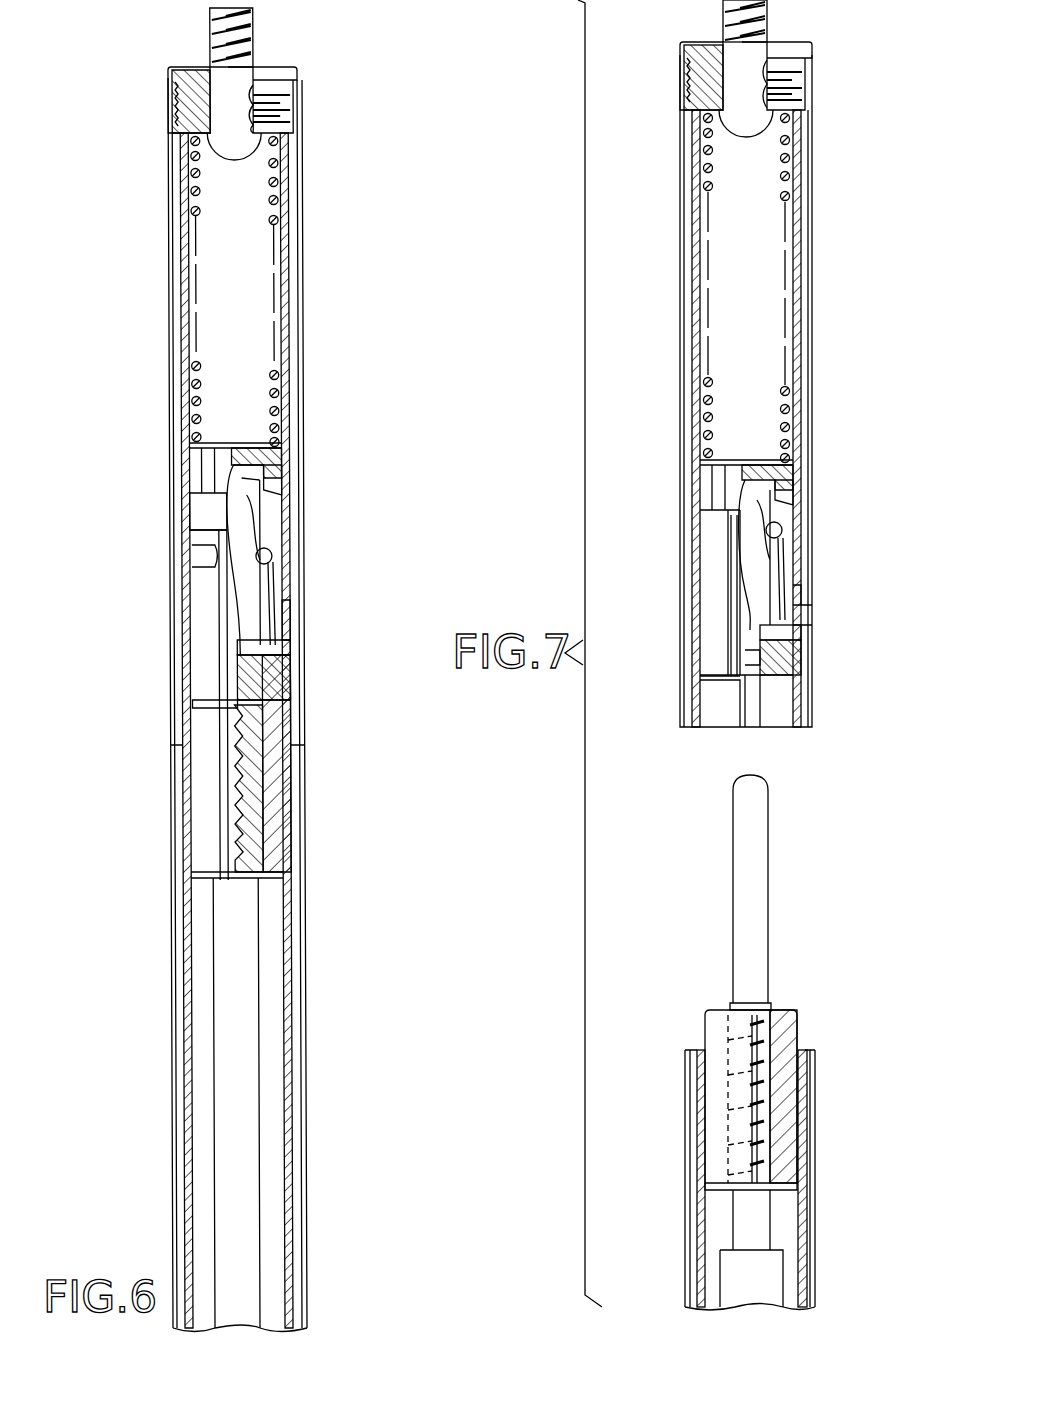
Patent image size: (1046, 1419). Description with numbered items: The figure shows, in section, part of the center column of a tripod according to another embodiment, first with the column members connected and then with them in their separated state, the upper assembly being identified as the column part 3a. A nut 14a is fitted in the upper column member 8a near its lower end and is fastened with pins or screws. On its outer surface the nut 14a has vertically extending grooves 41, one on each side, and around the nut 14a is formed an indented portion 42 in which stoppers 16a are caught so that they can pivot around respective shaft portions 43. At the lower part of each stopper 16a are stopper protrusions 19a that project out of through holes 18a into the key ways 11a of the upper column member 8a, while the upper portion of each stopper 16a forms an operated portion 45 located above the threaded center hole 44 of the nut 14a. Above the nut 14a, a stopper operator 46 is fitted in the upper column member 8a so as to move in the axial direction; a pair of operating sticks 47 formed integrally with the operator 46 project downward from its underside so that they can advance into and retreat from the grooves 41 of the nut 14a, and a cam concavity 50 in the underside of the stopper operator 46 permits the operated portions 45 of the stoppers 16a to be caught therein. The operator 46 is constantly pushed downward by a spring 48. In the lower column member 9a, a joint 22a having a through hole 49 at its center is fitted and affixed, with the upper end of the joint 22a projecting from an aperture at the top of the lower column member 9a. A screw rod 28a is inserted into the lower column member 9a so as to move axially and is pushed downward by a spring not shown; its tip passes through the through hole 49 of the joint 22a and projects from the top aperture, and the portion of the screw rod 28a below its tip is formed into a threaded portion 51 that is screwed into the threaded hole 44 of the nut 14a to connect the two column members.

In FIG. 6, the cap assembly 3a is at (168, 128).
In FIG. 6, the upper column member 8a is at (285, 380).
In FIG. 7, the upper column member 8a is at (800, 320).
In FIG. 6, the lower column member 9a is at (300, 1080).
In FIG. 6, the key ways 11a is at (170, 325).
In FIG. 7, the key ways 11a is at (812, 220).
In FIG. 6, the nut 14a is at (272, 683).
In FIG. 7, the nut 14a is at (795, 673).
In FIG. 6, the stoppers 16a is at (268, 595).
In FIG. 7, the stoppers 16a is at (783, 560).
In FIG. 6, the through holes 18a is at (282, 610).
In FIG. 7, the through holes 18a is at (800, 585).
In FIG. 6, the stopper protrusions 19a is at (282, 645).
In FIG. 7, the stopper protrusions 19a is at (808, 617).
In FIG. 6, the joint 22a is at (275, 768).
In FIG. 7, the joint 22a is at (790, 1040).
In FIG. 6, the screw rod 28a is at (242, 1008).
In FIG. 7, the screw rod 28a is at (738, 1273).
In FIG. 6, the grooves 41 is at (215, 648).
In FIG. 7, the grooves 41 is at (757, 666).
In FIG. 6, the indented portion 42 is at (268, 522).
In FIG. 7, the indented portion 42 is at (770, 595).
In FIG. 6, the shaft portions 43 is at (268, 556).
In FIG. 7, the shaft portions 43 is at (785, 530).
In FIG. 7, the threaded center hole 44 is at (757, 648).
In FIG. 6, the operated portion 45 is at (272, 492).
In FIG. 7, the operated portion 45 is at (798, 470).
In FIG. 6, the stopper operator 46 is at (230, 455).
In FIG. 7, the stopper operator 46 is at (735, 473).
In FIG. 6, the operating sticks 47 is at (218, 510).
In FIG. 7, the operating sticks 47 is at (738, 698).
In FIG. 6, the spring 48 is at (282, 197).
In FIG. 7, the spring 48 is at (790, 165).
In FIG. 6, the through hole 49 is at (262, 815).
In FIG. 7, the through hole 49 is at (785, 1132).
In FIG. 6, the cam concavity 50 is at (262, 463).
In FIG. 7, the cam concavity 50 is at (752, 493).
In FIG. 6, the threaded portion 51 is at (235, 684).
In FIG. 7, the threaded portion 51 is at (765, 1015).